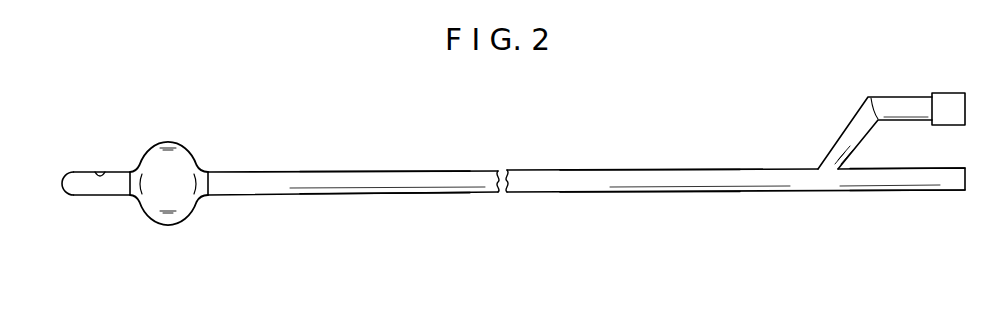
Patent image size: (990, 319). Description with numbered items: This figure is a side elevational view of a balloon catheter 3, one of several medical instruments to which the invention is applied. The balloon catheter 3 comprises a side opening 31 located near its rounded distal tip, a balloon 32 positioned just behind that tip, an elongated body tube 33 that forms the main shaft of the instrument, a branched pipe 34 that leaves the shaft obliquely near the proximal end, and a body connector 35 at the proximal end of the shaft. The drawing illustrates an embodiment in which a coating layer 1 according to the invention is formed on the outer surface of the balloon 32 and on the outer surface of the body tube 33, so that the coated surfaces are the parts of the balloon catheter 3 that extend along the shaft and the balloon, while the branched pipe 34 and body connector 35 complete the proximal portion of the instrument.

The coating layer 1 is at (180, 157).
The balloon catheter 3 is at (617, 144).
The side opening 31 is at (98, 172).
The balloon 32 is at (149, 148).
The body tube 33 is at (354, 176).
The branched pipe 34 is at (881, 101).
The body connector 35 is at (898, 175).